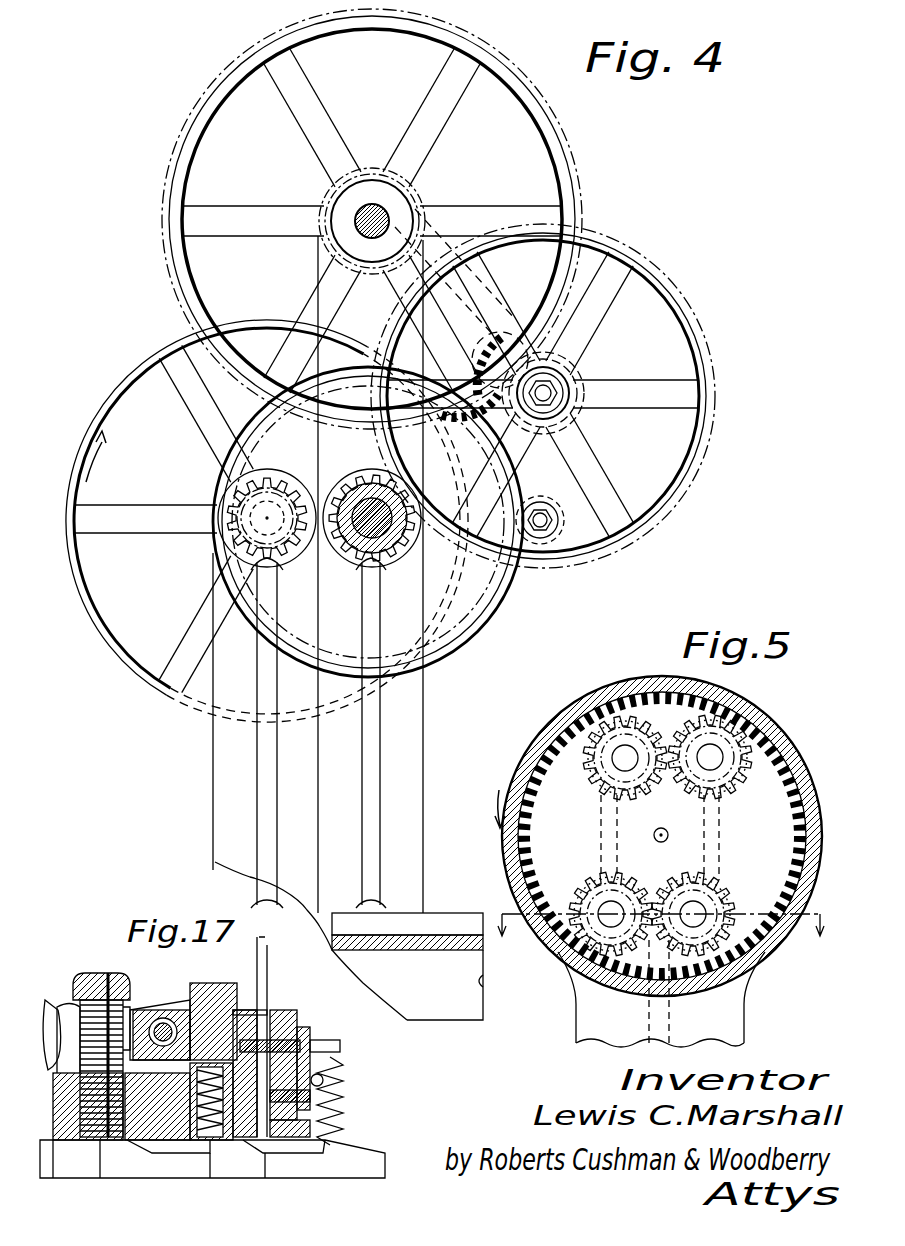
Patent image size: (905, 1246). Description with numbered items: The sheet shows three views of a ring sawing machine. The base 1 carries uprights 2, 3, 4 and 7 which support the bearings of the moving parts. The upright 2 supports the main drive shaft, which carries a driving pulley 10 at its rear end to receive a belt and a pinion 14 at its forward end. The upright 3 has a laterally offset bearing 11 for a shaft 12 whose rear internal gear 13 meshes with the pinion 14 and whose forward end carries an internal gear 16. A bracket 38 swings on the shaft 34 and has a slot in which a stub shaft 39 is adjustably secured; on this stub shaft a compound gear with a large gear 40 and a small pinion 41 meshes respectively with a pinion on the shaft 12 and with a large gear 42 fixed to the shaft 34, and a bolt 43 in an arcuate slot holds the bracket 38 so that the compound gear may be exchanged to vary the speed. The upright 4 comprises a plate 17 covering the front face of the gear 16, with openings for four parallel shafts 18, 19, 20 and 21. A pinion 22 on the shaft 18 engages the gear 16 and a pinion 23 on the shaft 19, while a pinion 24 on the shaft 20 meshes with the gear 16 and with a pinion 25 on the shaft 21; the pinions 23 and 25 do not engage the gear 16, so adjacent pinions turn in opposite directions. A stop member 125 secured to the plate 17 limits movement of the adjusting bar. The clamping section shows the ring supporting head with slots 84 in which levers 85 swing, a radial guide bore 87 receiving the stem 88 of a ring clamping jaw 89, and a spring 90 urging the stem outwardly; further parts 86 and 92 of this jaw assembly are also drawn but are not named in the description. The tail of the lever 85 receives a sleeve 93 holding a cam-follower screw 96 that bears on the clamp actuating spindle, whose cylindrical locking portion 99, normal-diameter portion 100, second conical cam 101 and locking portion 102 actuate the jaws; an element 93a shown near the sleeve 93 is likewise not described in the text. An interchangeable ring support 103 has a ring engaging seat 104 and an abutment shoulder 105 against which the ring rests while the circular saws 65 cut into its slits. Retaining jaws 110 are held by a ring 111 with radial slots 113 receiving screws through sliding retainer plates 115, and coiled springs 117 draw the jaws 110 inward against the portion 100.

In FIG. 4, the base 1 is at (433, 943).
In FIG. 4, the upright 2 is at (223, 837).
In FIG. 4, the upright 3 is at (417, 847).
In FIG. 5, the upright 4 is at (733, 1013).
In FIG. 5, the upright 7 is at (661, 911).
In FIG. 4, the driving pulley 10 is at (141, 674).
In FIG. 4, the bearing 11 is at (376, 562).
In FIG. 4, the shaft 12 is at (392, 533).
In FIG. 4, the internal gear 13 is at (502, 598).
In FIG. 4, the pinion 14 is at (228, 532).
In FIG. 5, the internal gear 16 is at (752, 734).
In FIG. 5, the plate 17 is at (772, 830).
In FIG. 5, the shaft 18 is at (711, 752).
In FIG. 5, the shaft 19 is at (626, 753).
In FIG. 5, the shaft 20 is at (609, 909).
In FIG. 5, the shaft 21 is at (697, 912).
In FIG. 5, the pinion 22 is at (722, 781).
In FIG. 5, the pinion 23 is at (600, 781).
In FIG. 5, the pinion 24 is at (572, 899).
In FIG. 5, the pinion 25 is at (669, 879).
In FIG. 5, the stop member 125 is at (662, 828).
In FIG. 4, the shaft 34 is at (373, 206).
In FIG. 4, the bracket 38 is at (632, 448).
In FIG. 4, the stub shaft 39 is at (568, 370).
In FIG. 4, the large gear 40 is at (704, 341).
In FIG. 4, the small pinion 41 is at (562, 370).
In FIG. 4, the large gear 42 is at (575, 178).
In FIG. 4, the bolt 43 is at (549, 533).
In FIG. 17, the circular saw 65 is at (262, 985).
In FIG. 17, the slot 84 is at (80, 985).
In FIG. 17, the lever 85 is at (170, 1010).
In FIG. 17, the pin 86 is at (163, 1020).
In FIG. 17, the radial guide bore 87 is at (195, 1120).
In FIG. 17, the stem 88 is at (215, 1000).
In FIG. 17, the ring clamping jaw 89 is at (250, 1010).
In FIG. 17, the spring 90 is at (250, 1140).
In FIG. 17, the lever 92 is at (135, 1010).
In FIG. 17, the sleeve 93 is at (53, 1010).
In FIG. 17, the bracket foot 93a is at (60, 1160).
In FIG. 17, the cam-follower screw 96 is at (105, 1150).
In FIG. 17, the cylindrical locking portion 99 is at (105, 1150).
In FIG. 17, the spindle portion 100 is at (230, 1140).
In FIG. 17, the second conical cam 101 is at (222, 1140).
In FIG. 17, the cylindrical locking portion 102 is at (325, 1165).
In FIG. 17, the ring support 103 is at (280, 1160).
In FIG. 17, the ring engaging seat 104 is at (305, 1030).
In FIG. 17, the abutment shoulder 105 is at (270, 1040).
In FIG. 17, the jaw 110 is at (330, 1128).
In FIG. 17, the ring 111 is at (290, 1025).
In FIG. 17, the radial slot 113 is at (305, 1050).
In FIG. 17, the sliding retainer plate 115 is at (340, 1044).
In FIG. 17, the coiled spring 117 is at (345, 1078).